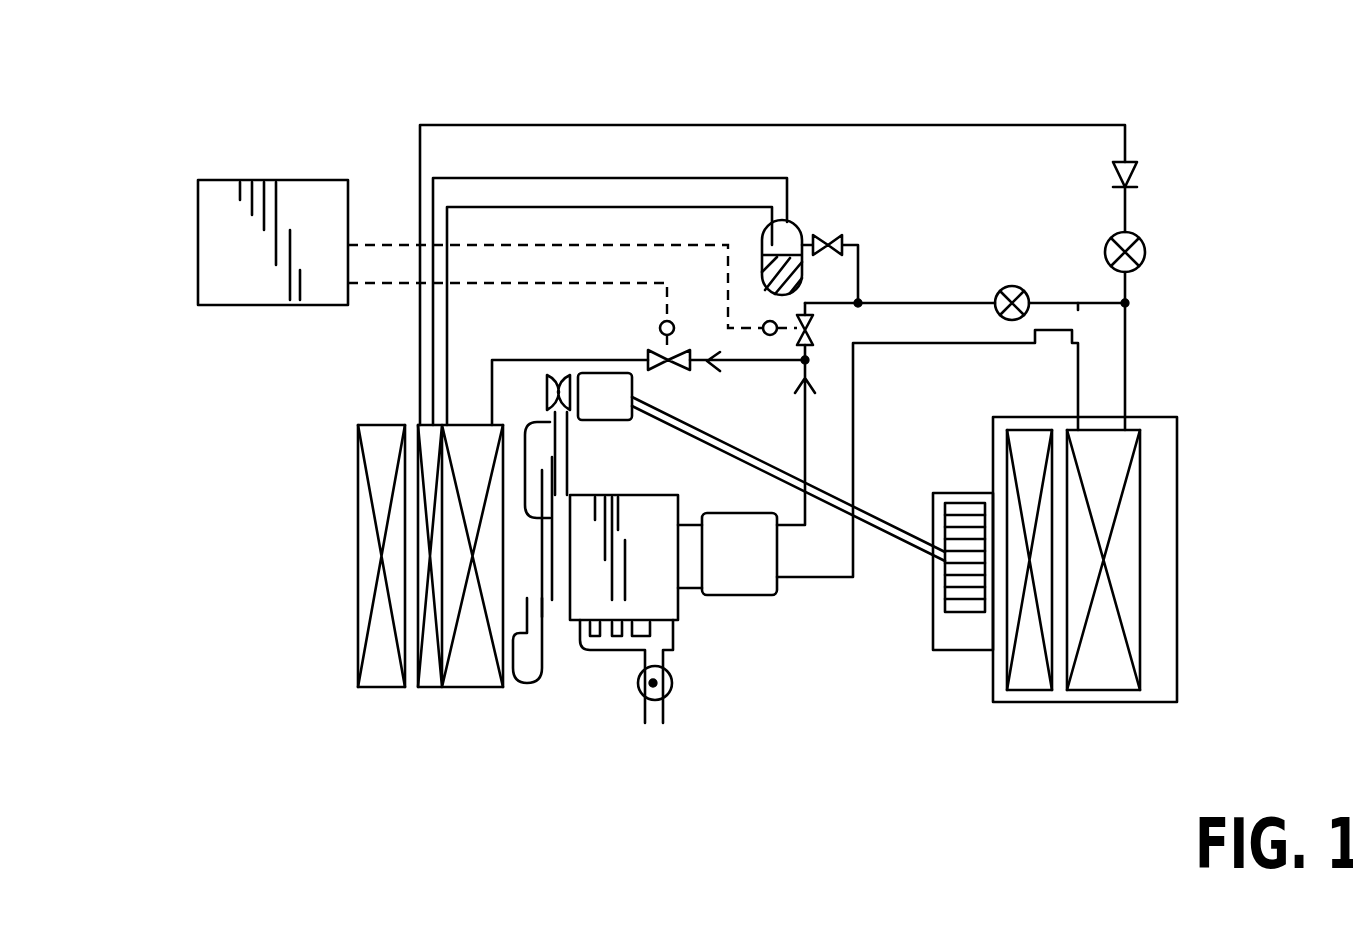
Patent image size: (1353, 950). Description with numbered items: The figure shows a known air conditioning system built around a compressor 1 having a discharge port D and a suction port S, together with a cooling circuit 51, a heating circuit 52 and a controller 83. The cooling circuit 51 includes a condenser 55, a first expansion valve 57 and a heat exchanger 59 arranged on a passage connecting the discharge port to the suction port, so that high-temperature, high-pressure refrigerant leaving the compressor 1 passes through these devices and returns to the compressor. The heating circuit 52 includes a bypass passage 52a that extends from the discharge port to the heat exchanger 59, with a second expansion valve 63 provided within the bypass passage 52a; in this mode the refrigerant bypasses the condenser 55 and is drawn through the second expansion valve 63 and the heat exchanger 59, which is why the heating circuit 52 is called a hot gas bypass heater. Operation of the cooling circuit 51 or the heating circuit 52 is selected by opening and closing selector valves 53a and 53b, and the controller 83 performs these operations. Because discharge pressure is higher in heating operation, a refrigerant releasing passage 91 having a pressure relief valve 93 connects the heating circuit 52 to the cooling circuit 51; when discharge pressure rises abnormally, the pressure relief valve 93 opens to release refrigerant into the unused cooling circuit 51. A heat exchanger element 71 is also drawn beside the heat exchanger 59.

The compressor 1 is at (730, 580).
The cooling circuit 51 is at (698, 125).
The heating circuit 52 is at (943, 302).
The bypass passage 52a is at (1082, 307).
The selector valve 53a is at (662, 352).
The selector valve 53b is at (823, 330).
The condenser 55 is at (473, 690).
The first expansion valve 57 is at (1133, 230).
The heat exchanger 59 is at (1142, 508).
The second expansion valve 63 is at (1015, 287).
The heat exchanger 71 is at (1028, 690).
The controller 83 is at (215, 262).
The refrigerant releasing passage 91 is at (862, 267).
The pressure relief valve 93 is at (823, 235).